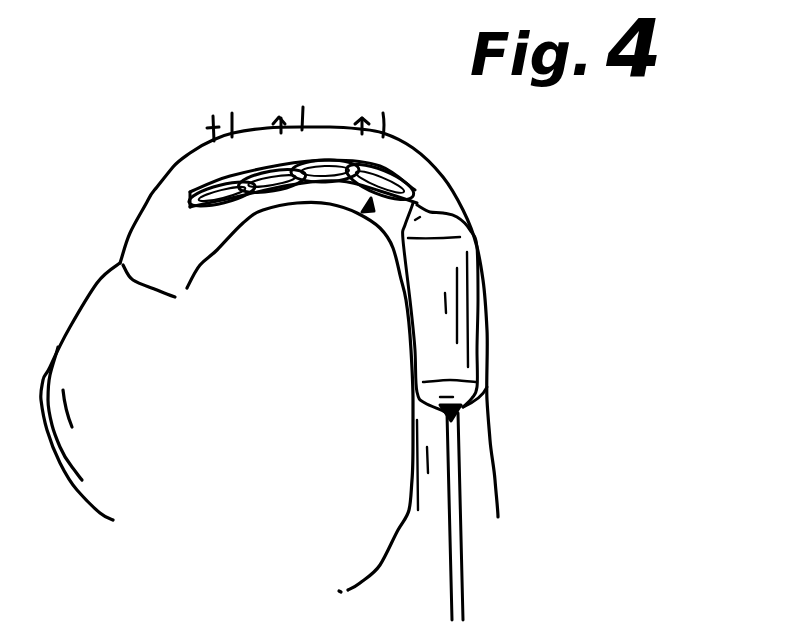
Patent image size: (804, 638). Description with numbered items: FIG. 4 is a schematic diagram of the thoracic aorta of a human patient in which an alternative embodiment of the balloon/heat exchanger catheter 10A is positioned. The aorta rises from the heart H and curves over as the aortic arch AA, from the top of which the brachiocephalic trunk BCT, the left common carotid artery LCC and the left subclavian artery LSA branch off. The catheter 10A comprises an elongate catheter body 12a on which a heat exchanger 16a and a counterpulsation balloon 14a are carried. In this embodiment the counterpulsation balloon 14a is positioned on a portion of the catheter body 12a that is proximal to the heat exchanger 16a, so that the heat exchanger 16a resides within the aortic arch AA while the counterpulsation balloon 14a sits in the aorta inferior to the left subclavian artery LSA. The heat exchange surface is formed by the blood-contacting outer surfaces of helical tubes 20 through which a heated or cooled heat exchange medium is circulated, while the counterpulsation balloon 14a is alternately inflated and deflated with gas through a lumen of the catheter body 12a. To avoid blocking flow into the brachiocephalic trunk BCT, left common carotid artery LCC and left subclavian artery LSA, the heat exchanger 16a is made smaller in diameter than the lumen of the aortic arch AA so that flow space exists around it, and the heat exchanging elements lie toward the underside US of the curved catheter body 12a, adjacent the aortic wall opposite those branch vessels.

The balloon/heat exchanger catheter 10A is at (535, 366).
The catheter body 12a is at (463, 562).
The counterpulsation balloon 14a is at (455, 290).
The heat exchanger 16a is at (343, 163).
The helical tubes 20 is at (280, 195).
The aortic arch AA is at (173, 187).
The brachiocephalic trunk BCT is at (214, 121).
The left common carotid artery LCC is at (281, 124).
The left subclavian artery LSA is at (362, 125).
The underside US is at (366, 212).
The heart H is at (234, 432).